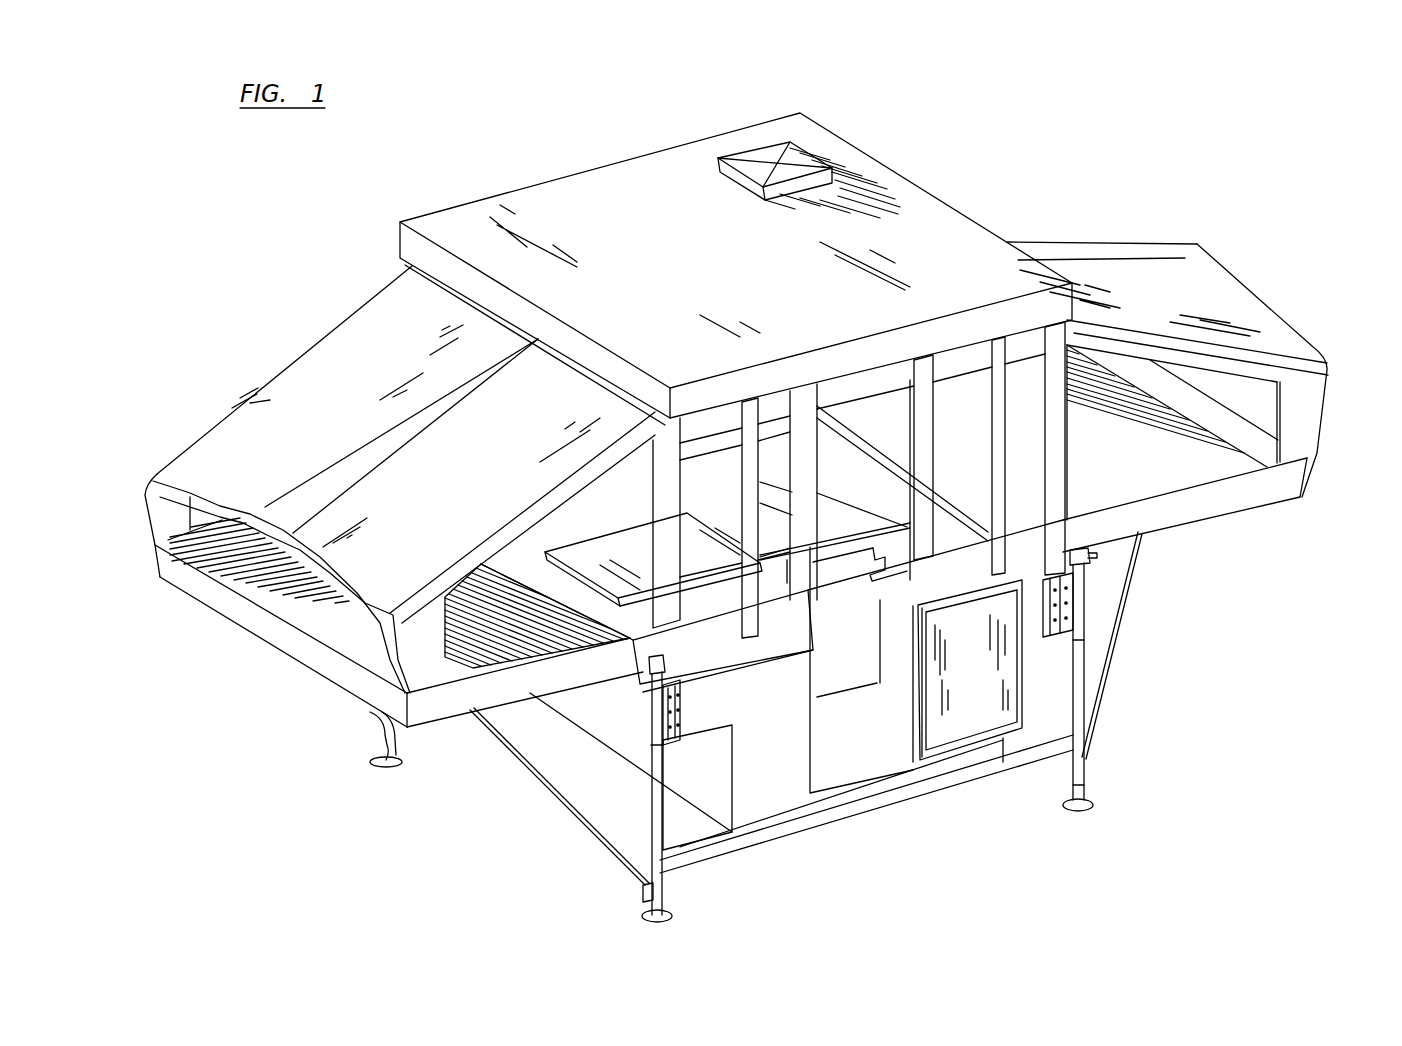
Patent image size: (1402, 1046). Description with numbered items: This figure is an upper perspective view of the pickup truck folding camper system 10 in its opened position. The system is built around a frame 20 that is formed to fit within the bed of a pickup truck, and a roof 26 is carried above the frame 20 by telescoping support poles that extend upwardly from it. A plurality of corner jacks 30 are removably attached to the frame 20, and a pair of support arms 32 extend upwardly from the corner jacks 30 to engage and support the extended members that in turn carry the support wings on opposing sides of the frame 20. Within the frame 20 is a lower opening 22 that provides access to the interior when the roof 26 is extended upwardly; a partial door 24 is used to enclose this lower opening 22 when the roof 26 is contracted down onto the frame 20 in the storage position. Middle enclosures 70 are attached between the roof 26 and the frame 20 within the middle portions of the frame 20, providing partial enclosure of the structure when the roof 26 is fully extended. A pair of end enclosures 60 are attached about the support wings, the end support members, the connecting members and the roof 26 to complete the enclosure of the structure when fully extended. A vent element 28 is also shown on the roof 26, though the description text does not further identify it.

The pickup truck folding camper system 10 is at (270, 178).
The frame 20 is at (768, 812).
The lower opening 22 is at (860, 780).
The partial door 24 is at (985, 713).
The roof 26 is at (950, 230).
The roof vent / hatch 28 is at (740, 162).
The corner jacks 30 is at (372, 757).
The support arms 32 is at (565, 815).
The end enclosures 60 is at (305, 355).
The middle enclosures 70 is at (1003, 498).